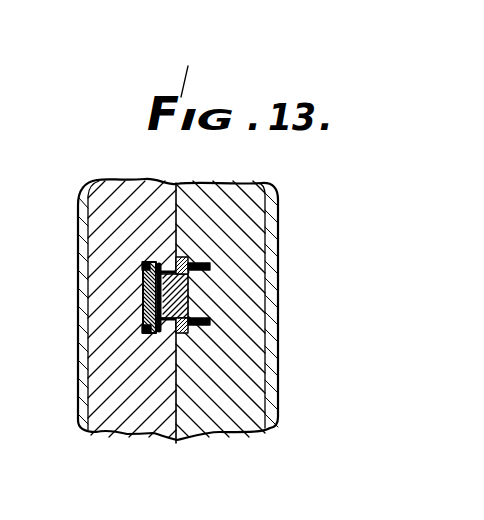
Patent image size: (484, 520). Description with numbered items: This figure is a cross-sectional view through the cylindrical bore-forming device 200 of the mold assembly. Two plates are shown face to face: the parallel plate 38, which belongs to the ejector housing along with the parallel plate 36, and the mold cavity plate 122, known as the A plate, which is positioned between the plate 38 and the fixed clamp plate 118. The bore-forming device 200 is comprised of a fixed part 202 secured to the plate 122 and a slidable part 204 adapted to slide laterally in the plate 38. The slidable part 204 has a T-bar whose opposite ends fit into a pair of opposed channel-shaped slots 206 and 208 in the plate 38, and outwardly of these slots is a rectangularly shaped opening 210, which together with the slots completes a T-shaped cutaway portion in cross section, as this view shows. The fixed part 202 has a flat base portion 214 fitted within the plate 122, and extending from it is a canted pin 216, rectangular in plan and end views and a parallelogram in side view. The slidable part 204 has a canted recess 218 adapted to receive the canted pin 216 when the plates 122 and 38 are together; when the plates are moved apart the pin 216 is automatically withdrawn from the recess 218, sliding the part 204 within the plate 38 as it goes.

The parallel plate 36 is at (82, 225).
The parallel plate 38 is at (117, 371).
The fixed clamp plate 118 is at (266, 233).
The mold cavity plate 122 is at (246, 408).
The cylindrical bore-forming device 200 is at (216, 238).
The fixed part 202 is at (194, 289).
The slidable part 204 is at (143, 309).
The channel-shaped slot 206 is at (150, 262).
The channel-shaped slot 208 is at (156, 323).
The rectangularly shaped opening 210 is at (168, 322).
The flat base portion 214 is at (196, 303).
The canted pin 216 is at (174, 258).
The canted recess 218 is at (143, 288).